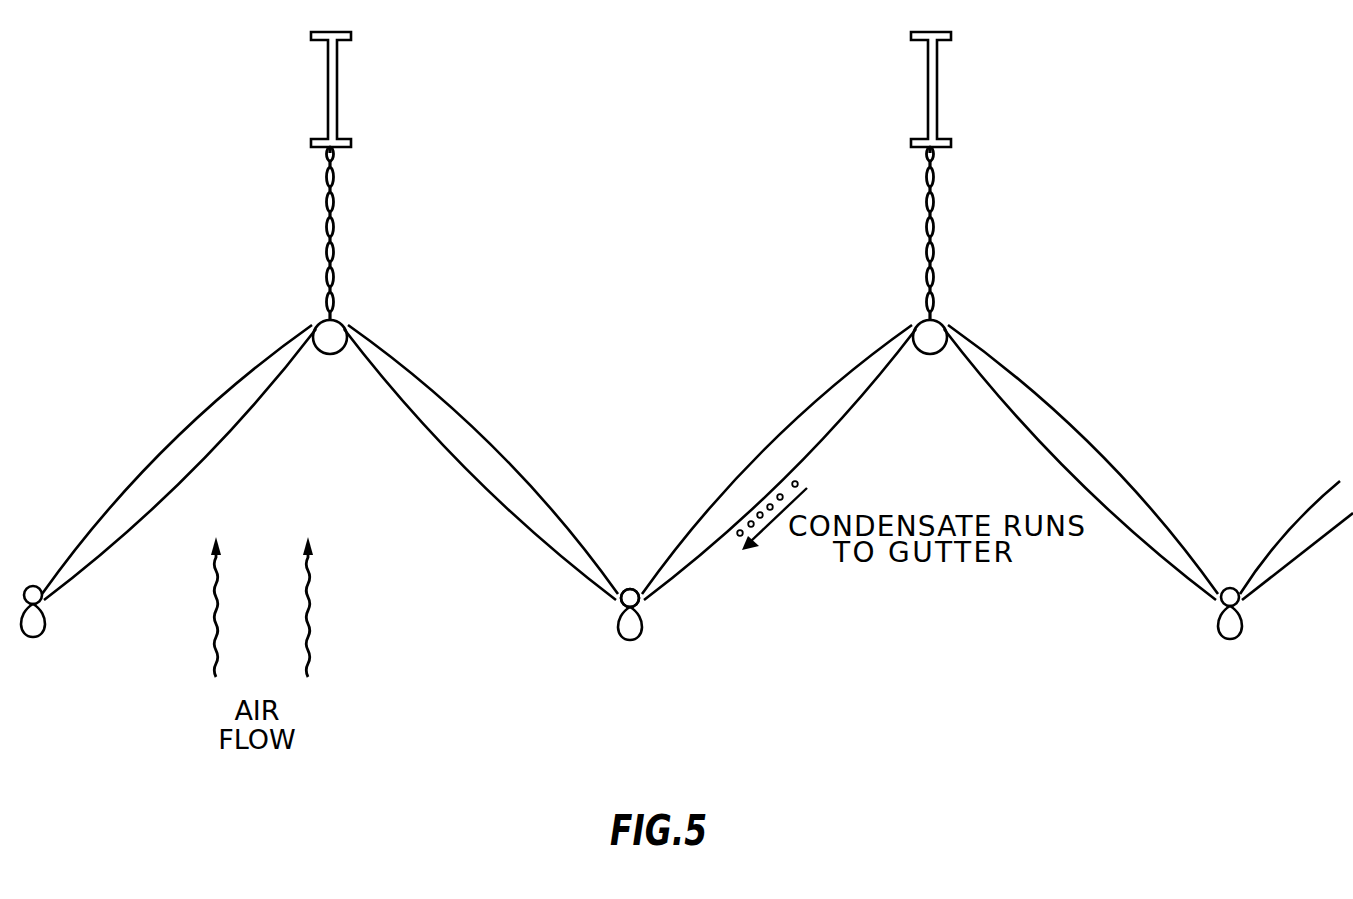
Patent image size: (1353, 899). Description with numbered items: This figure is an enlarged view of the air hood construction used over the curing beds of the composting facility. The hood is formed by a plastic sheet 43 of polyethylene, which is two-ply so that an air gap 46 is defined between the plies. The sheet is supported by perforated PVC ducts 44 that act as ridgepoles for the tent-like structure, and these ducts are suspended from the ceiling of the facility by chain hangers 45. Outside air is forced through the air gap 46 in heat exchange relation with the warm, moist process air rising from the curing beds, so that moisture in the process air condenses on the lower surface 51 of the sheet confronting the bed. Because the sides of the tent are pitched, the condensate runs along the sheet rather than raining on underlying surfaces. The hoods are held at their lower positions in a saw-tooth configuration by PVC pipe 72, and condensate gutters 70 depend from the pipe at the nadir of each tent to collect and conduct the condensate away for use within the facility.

The plastic sheet 43 is at (1040, 447).
The perforated PVC ducts 44 is at (321, 354).
The chain hangers 45 is at (336, 239).
The air gap 46 is at (448, 415).
The lower surface 51 is at (478, 504).
The condensate gutters 70 is at (611, 645).
The PVC pipe 72 is at (627, 588).